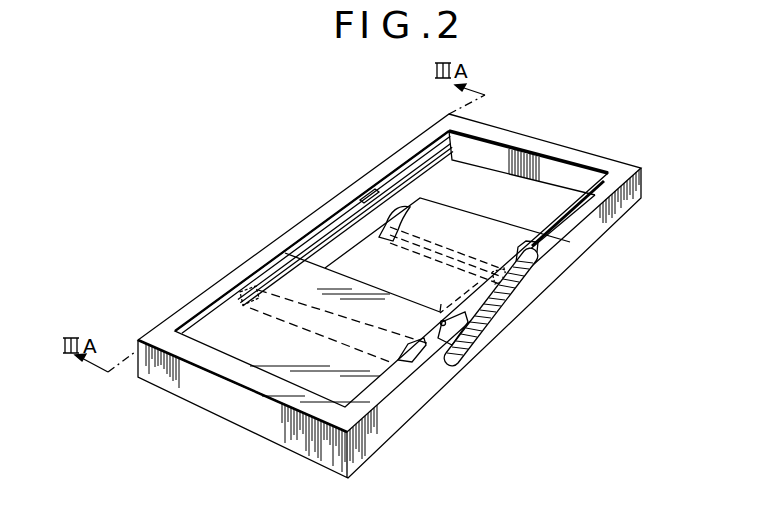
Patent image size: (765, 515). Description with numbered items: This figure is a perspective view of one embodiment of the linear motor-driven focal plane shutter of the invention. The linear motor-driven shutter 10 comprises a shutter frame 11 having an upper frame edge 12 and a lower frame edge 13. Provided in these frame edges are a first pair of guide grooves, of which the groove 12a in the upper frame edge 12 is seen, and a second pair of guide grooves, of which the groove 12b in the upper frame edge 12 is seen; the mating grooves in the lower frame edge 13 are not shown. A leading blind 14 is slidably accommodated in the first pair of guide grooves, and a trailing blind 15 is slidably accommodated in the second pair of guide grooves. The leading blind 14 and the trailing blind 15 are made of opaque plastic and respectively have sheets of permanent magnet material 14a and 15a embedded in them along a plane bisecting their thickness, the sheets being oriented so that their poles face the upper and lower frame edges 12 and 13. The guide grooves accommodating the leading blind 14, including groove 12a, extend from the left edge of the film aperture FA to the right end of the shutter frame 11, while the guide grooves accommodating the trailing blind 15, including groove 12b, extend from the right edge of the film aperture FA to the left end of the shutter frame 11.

The linear motor-driven shutter 10 is at (289, 229).
The shutter frame 11 is at (548, 148).
The upper frame edge 12 is at (417, 146).
The guide groove 12a is at (424, 168).
The guide groove 12b is at (371, 194).
The lower frame edge 13 is at (587, 206).
The leading blind 14 is at (470, 220).
The sheet of permanent magnet material 14a is at (453, 247).
The trailing blind 15 is at (223, 321).
The sheet of permanent magnet material 15a is at (307, 325).
The film aperture FA is at (405, 219).